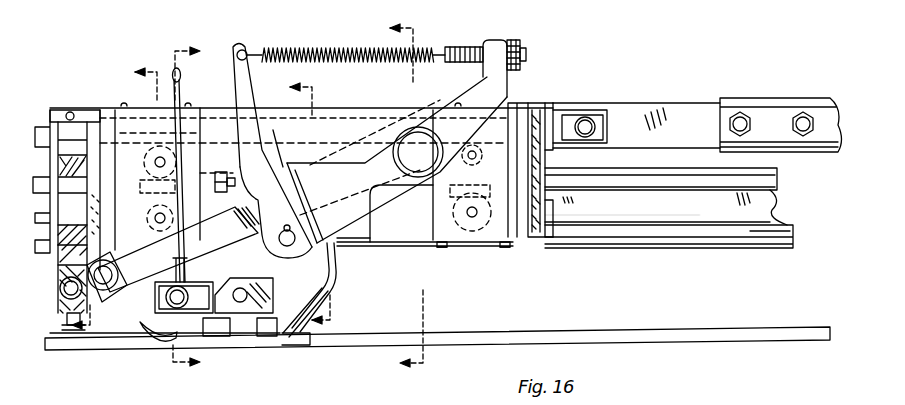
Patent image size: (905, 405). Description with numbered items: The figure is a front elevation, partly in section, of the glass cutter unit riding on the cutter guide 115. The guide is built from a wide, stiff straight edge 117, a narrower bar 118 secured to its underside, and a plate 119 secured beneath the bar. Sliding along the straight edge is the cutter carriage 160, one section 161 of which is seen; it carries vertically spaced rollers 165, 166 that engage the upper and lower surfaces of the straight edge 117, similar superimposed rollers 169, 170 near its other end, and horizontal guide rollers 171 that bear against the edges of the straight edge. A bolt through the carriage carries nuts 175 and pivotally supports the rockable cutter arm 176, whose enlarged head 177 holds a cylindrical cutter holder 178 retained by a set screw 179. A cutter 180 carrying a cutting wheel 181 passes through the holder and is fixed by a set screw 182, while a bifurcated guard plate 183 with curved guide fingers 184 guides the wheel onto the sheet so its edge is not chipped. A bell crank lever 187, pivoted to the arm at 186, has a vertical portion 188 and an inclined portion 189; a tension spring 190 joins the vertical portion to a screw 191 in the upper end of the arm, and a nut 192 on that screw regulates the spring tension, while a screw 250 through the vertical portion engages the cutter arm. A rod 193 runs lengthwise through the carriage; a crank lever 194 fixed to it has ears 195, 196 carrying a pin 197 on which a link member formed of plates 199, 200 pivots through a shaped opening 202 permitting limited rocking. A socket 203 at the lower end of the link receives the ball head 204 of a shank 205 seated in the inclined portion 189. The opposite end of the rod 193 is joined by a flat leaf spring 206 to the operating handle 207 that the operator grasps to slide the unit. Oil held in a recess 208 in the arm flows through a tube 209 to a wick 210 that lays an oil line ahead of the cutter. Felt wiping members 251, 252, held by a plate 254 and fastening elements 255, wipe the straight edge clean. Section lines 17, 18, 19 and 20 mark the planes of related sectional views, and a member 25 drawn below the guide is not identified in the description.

The base bar 25 is at (610, 330).
The cutter guide 115 is at (595, 250).
The straight edge 117 is at (687, 160).
The bar 118 is at (727, 225).
The plate 119 is at (667, 240).
The cutter carriage 160 is at (400, 100).
The section 161 is at (413, 227).
The roller 165 is at (182, 102).
The roller 166 is at (170, 241).
The roller 169 is at (515, 104).
The roller 170 is at (477, 247).
The horizontal guide roller 171 is at (178, 173).
The nut 175 is at (415, 145).
The cutter arm 176 is at (366, 243).
The enlarged head 177 is at (277, 290).
The cutter holder 178 is at (200, 337).
The set screw 179 is at (267, 337).
The cutter 180 is at (187, 280).
The cutting wheel 181 is at (163, 348).
The set screw 182 is at (166, 296).
The guard plate 183 is at (237, 340).
The guide finger 184 is at (147, 337).
The pivotal connection 186 is at (230, 183).
The bell crank lever 187 is at (270, 153).
The vertical portion 188 is at (242, 112).
The inclined portion 189 is at (240, 209).
The tension spring 190 is at (347, 50).
The screw 191 is at (468, 46).
The nut 192 is at (516, 44).
The rod 193 is at (565, 125).
The crank lever 194 is at (63, 95).
The ear 195 is at (75, 155).
The ear 196 is at (100, 110).
The pin 197 is at (155, 155).
The plate 199 is at (67, 305).
The plate 200 is at (120, 262).
The opening 202 is at (56, 230).
The socket 203 is at (75, 327).
The ball head 204 is at (68, 332).
The shank 205 is at (112, 300).
The flat leaf spring 206 is at (643, 120).
The operating handle 207 is at (793, 85).
The recess 208 is at (317, 197).
The tube 209 is at (333, 280).
The wick 210 is at (307, 345).
The screw 250 is at (293, 147).
The wiping member 251 is at (118, 228).
The wiping member 252 is at (533, 238).
The plate 254 is at (560, 240).
The fastening element 255 is at (570, 214).
The section line 17- 17 is at (117, 192).
The section line 18- 18 is at (322, 205).
The section line 19- 19 is at (421, 198).
The section line 20- 20 is at (187, 209).